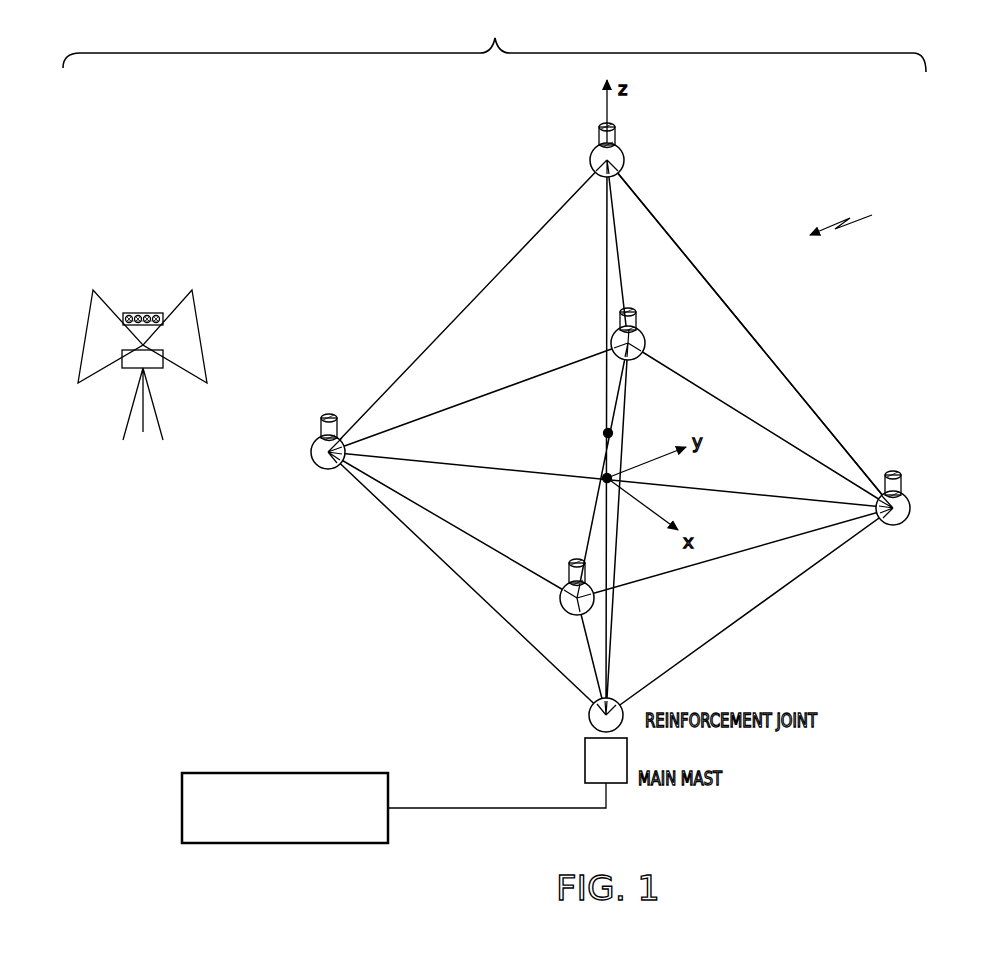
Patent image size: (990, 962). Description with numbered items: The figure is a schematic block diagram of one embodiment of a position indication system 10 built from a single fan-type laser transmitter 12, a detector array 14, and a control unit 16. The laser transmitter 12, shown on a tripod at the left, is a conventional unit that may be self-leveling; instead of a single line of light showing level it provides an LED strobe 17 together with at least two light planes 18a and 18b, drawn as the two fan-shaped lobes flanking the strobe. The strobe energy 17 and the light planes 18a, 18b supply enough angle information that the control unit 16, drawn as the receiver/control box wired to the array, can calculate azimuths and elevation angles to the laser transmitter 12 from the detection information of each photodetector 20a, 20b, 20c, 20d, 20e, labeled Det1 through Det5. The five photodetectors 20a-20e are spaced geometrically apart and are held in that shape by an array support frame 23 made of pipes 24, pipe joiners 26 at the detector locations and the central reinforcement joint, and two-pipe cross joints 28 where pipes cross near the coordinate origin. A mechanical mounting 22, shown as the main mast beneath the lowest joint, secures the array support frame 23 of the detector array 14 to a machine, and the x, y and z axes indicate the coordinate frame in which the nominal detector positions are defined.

The position indication system 10 is at (494, 44).
The fan-type laser transmitter 12 is at (130, 313).
The detector array 14 is at (855, 218).
The control unit 16 is at (232, 773).
The LED strobe 17 is at (155, 313).
The light plane 18a is at (90, 338).
The light plane 18b is at (195, 338).
The photodetector 20a is at (321, 428).
The photodetector 20b is at (569, 576).
The photodetector 20c is at (901, 487).
The photodetector 20d is at (637, 324).
The photodetector 20e is at (617, 138).
The mechanical mounting 22 is at (585, 757).
The array support frame 23 is at (833, 425).
The pipes 24 is at (471, 305).
The pipe joiners 26 is at (590, 162).
The two-pipe cross joints 28 is at (604, 433).